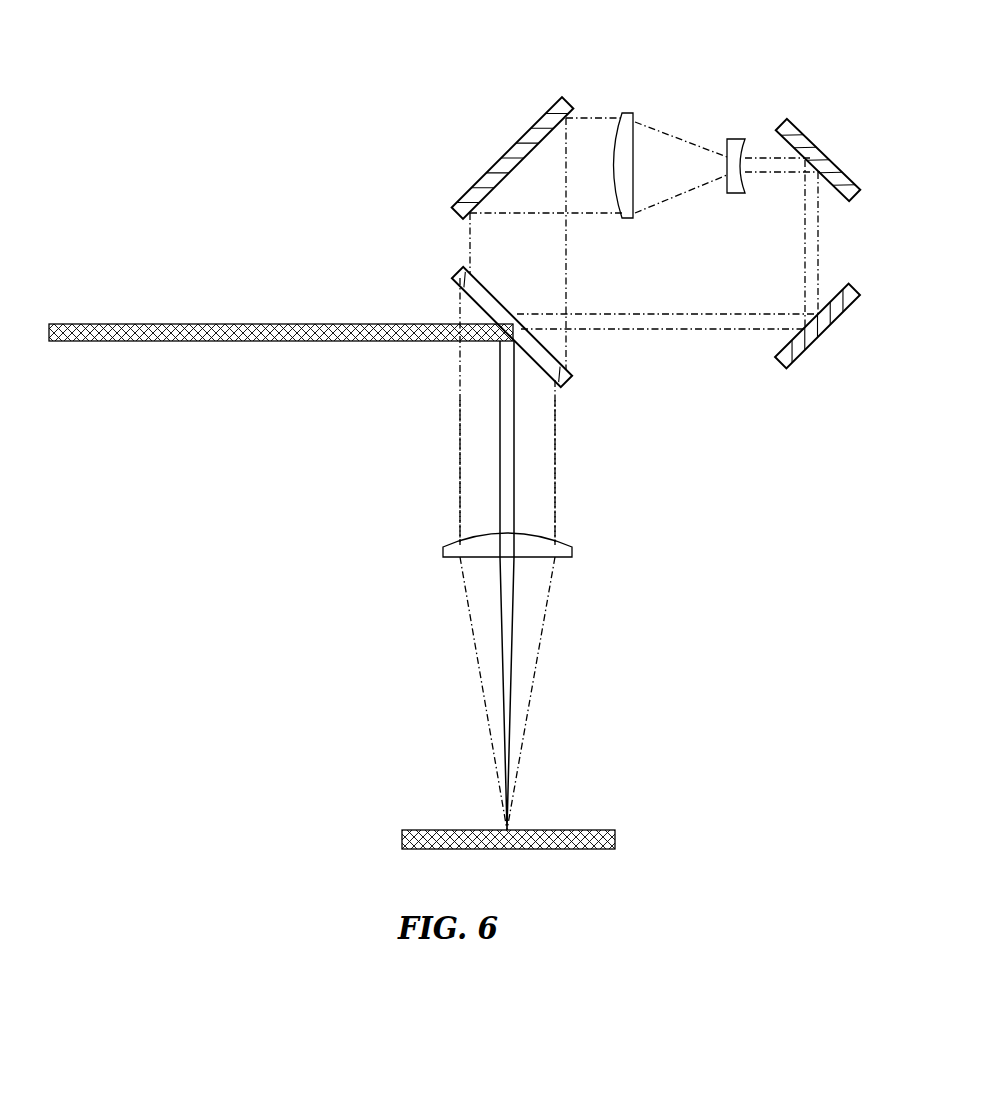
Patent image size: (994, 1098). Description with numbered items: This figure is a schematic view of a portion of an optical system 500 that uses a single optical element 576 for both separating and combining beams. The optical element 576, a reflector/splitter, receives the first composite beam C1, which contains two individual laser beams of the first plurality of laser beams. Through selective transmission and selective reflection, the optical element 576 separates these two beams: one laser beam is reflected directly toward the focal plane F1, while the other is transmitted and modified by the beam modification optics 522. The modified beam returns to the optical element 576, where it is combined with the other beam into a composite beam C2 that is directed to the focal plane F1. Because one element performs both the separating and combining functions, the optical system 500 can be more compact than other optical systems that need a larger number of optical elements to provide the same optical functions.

The optical system 500 is at (236, 99).
The beam modification optics 522 is at (749, 85).
The optical element 576 is at (487, 298).
The first composite beam C1 is at (90, 342).
The second beam path / sample C2 is at (586, 475).
The focal plane F1 is at (530, 840).